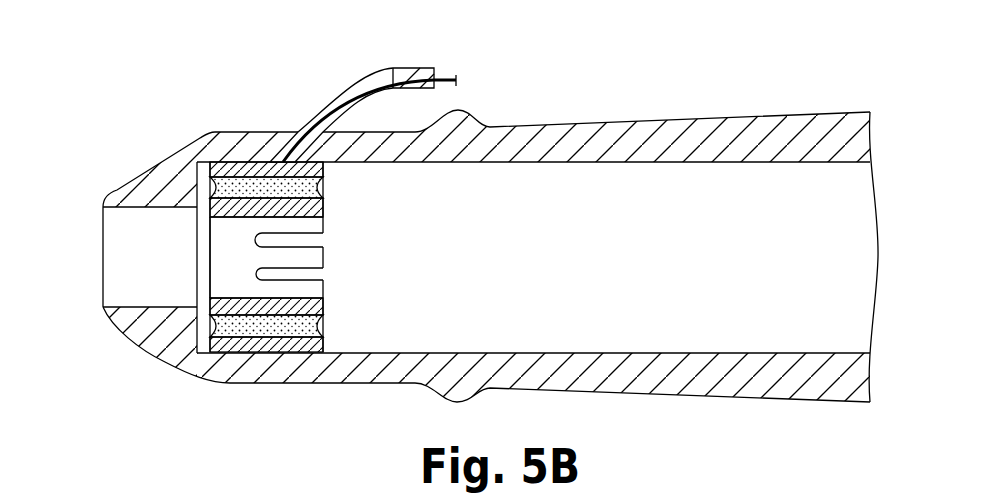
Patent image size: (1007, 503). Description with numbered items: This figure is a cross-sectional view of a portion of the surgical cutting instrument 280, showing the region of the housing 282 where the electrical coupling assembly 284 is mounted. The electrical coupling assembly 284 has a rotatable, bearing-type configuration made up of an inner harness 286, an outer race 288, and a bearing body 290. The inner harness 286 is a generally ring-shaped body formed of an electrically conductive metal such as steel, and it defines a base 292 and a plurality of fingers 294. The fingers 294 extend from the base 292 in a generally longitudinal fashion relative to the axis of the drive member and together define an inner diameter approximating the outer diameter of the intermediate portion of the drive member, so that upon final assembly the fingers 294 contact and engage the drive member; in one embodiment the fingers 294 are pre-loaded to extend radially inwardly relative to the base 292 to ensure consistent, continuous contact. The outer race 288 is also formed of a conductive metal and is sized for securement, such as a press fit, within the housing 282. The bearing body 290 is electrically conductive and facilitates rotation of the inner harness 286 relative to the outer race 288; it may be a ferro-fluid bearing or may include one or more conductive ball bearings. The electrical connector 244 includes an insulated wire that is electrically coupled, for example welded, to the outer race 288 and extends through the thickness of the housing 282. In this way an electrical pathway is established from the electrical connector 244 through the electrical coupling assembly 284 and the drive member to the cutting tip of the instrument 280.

The electrical connector 244 is at (452, 77).
The surgical cutting instrument 280 is at (644, 62).
The housing 282 is at (713, 108).
The electrical coupling assembly 284 is at (365, 277).
The inner harness 286 is at (206, 212).
The outer race 288 is at (193, 348).
The bearing body 290 is at (320, 323).
The base 292 is at (222, 270).
The fingers 294 is at (310, 225).